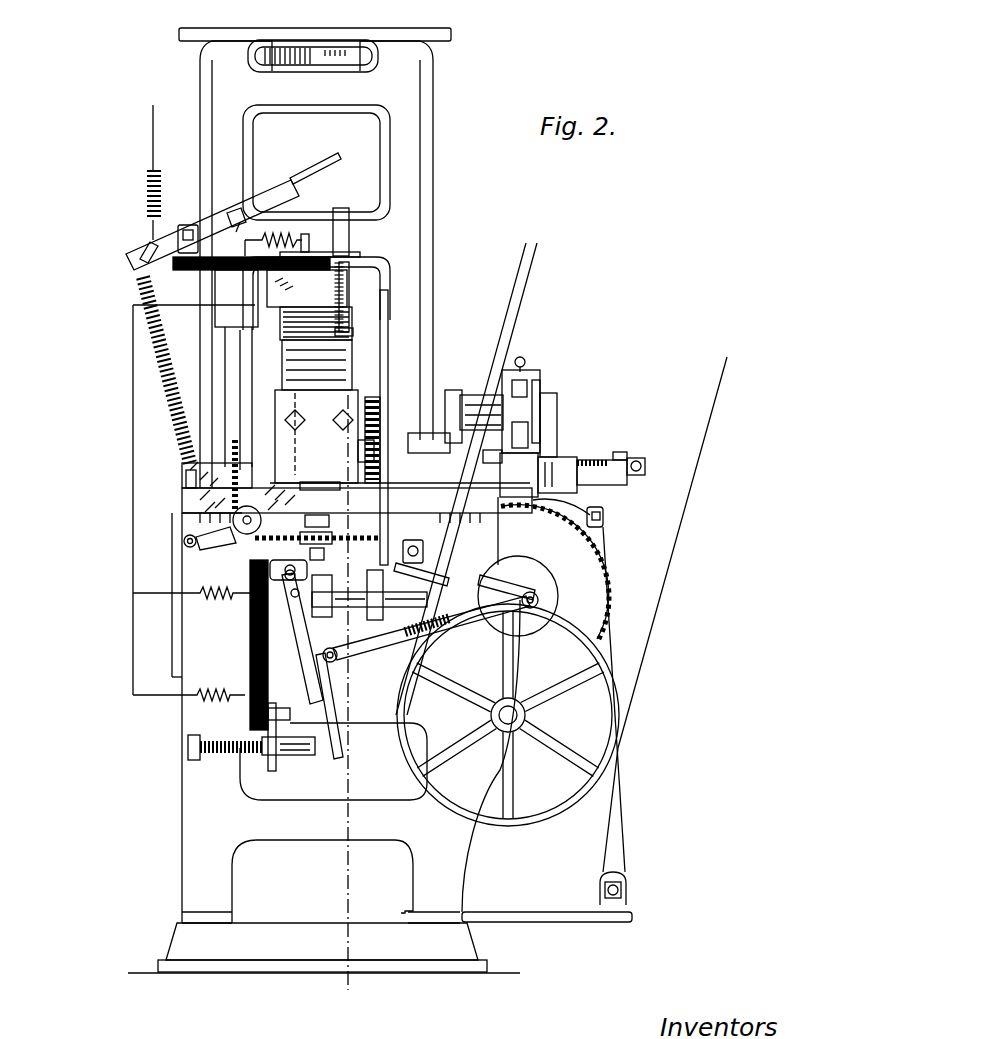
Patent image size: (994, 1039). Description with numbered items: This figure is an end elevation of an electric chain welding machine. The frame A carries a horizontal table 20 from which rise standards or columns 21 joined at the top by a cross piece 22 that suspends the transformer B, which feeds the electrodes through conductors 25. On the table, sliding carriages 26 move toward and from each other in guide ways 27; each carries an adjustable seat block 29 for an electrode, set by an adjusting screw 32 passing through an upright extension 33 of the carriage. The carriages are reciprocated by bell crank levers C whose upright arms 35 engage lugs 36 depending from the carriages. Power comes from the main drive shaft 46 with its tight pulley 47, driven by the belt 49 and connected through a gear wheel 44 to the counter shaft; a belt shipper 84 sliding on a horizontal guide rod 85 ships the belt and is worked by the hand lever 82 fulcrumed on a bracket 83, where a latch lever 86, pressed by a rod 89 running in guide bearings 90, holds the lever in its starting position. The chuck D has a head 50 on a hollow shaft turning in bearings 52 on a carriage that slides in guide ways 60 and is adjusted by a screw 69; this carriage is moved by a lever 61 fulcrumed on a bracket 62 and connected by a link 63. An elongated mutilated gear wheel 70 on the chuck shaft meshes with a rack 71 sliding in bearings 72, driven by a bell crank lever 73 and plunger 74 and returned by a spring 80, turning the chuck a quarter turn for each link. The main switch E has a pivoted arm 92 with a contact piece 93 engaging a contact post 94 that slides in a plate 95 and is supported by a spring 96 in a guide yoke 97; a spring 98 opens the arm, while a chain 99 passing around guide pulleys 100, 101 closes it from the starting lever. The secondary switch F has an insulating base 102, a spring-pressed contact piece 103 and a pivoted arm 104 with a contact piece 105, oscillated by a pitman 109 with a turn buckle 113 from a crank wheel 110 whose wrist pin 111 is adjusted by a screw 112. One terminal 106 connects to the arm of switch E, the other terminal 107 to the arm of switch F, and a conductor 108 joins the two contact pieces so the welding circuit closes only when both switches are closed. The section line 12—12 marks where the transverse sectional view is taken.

The cross piece 22 is at (364, 32).
The standards or columns 21 is at (418, 178).
The frame A is at (182, 806).
The transformer B is at (298, 129).
The bell crank levers C is at (380, 575).
The chuck D is at (466, 479).
The main or starting switch E is at (248, 280).
The secondary switch F is at (271, 645).
The pivoted switch arm 92 is at (230, 205).
The contact piece 93 is at (308, 163).
The contact post 94 is at (335, 213).
The plate 95 is at (350, 245).
The spring 96 is at (309, 305).
The guide yoke 97 is at (352, 300).
The terminal 106 is at (153, 142).
The spring 98 is at (150, 338).
The conductor 108 is at (138, 434).
The terminal 107 is at (122, 596).
The insulating base 102 is at (254, 678).
The adjustable seat blocks 29 is at (210, 428).
The sliding carriages 26 is at (250, 455).
The guide ways 27 is at (188, 470).
The table 20 is at (182, 496).
The lugs 36 is at (303, 473).
The conductors 25 is at (317, 365).
The adjusting screws 32 is at (316, 436).
The upright extensions 33 is at (314, 448).
The bracket 83 is at (351, 448).
The hand lever 82 is at (380, 505).
The section line 12— 12 is at (297, 410).
The latch lever 86 is at (370, 421).
The rod 89 is at (388, 400).
The guide bearings 90 is at (430, 400).
The skeleton frame or head 50 is at (481, 398).
The elongated mutilated gear wheel 70 is at (508, 373).
The spring 80 is at (522, 357).
The rack 71 is at (528, 388).
The bell crank lever 73 is at (530, 405).
The bearings 72 is at (545, 412).
The rod or plunger 74 is at (557, 420).
The bearings 52 is at (548, 430).
The guide ways 60 is at (560, 468).
The screw 69 is at (610, 455).
The link 63 is at (592, 505).
The belt 49 is at (707, 432).
The belt shipper 84 is at (440, 545).
The horizontal guide rod 85 is at (436, 567).
The guide pulley 100 is at (211, 545).
The chain 99 is at (266, 538).
The guide pulley 101 is at (338, 540).
The gear wheel 44 is at (604, 570).
The crank wheel 110 is at (518, 596).
The wrist pin 111 is at (536, 593).
The screw 112 is at (498, 570).
The pitman 109 is at (385, 640).
The turn buckle 113 is at (430, 615).
The horizontal shaft 46 is at (508, 719).
The tight pulley 47 is at (582, 785).
The lever 61 is at (608, 798).
The bracket 62 is at (556, 893).
The upright arms 35 is at (300, 612).
The pivoted switch arm 104 is at (310, 678).
The contact piece 105 is at (344, 752).
The spring-pressed contact piece 103 is at (305, 756).